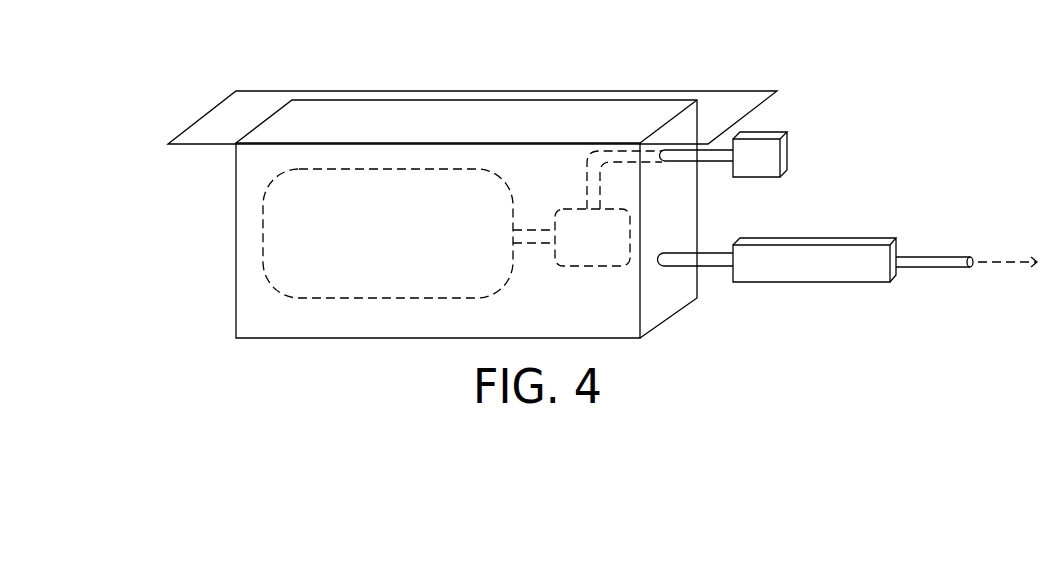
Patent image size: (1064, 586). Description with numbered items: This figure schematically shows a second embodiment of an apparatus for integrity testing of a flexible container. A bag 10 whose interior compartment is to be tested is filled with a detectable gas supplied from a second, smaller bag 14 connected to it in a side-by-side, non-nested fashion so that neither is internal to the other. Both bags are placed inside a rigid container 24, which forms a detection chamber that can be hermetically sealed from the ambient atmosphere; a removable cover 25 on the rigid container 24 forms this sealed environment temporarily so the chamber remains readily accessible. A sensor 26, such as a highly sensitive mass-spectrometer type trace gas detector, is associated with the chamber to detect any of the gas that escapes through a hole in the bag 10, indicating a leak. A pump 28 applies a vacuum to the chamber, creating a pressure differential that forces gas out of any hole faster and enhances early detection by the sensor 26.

The bag 10 is at (353, 298).
The bag 14 is at (647, 232).
The rigid container 24 is at (422, 338).
The removable cover 25 is at (714, 90).
The sensor 26 is at (783, 152).
The pump 28 is at (818, 278).